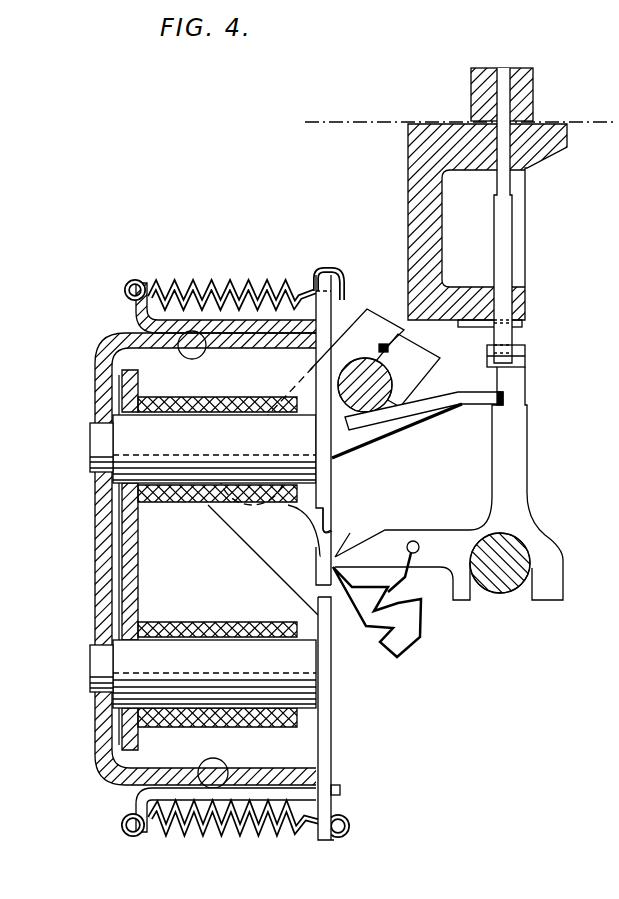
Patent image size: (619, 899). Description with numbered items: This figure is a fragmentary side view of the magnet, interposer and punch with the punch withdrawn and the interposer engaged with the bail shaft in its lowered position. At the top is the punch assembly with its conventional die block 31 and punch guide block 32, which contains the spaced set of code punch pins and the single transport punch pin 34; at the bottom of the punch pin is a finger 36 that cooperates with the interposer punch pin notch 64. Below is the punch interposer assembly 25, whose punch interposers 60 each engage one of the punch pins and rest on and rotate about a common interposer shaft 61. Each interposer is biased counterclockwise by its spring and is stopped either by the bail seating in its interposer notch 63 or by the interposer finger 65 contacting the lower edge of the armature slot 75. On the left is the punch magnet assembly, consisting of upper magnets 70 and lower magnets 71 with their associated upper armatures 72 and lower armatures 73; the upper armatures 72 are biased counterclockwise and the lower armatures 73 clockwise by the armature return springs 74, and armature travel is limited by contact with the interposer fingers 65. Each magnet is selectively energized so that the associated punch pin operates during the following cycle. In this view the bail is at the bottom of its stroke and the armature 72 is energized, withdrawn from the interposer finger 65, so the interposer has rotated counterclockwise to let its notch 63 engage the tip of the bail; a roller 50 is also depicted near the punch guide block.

The punch interposer assembly 25 is at (309, 449).
The die block 31 is at (525, 94).
The punch guide block 32 is at (410, 200).
The transport punch pin 34 is at (508, 236).
The finger 36 is at (525, 354).
The roller 50 is at (367, 309).
The punch interposer 60 is at (520, 452).
The interposer shaft 61 is at (517, 557).
The interposer notch 63 is at (532, 400).
The interposer punch pin notch 64 is at (512, 348).
The interposer finger 65 is at (390, 537).
The upper magnet 70 is at (97, 443).
The lower magnet 71 is at (100, 663).
The upper armature 72 is at (327, 487).
The lower armature 73 is at (331, 745).
The armature return spring 74 is at (217, 292).
The armature slot 75 is at (333, 528).